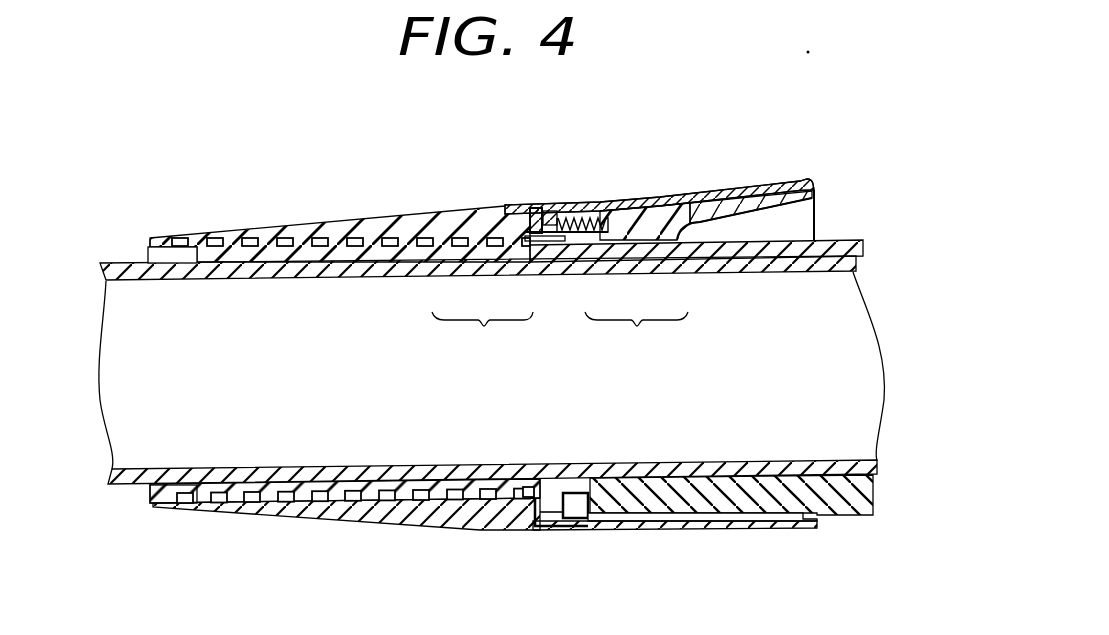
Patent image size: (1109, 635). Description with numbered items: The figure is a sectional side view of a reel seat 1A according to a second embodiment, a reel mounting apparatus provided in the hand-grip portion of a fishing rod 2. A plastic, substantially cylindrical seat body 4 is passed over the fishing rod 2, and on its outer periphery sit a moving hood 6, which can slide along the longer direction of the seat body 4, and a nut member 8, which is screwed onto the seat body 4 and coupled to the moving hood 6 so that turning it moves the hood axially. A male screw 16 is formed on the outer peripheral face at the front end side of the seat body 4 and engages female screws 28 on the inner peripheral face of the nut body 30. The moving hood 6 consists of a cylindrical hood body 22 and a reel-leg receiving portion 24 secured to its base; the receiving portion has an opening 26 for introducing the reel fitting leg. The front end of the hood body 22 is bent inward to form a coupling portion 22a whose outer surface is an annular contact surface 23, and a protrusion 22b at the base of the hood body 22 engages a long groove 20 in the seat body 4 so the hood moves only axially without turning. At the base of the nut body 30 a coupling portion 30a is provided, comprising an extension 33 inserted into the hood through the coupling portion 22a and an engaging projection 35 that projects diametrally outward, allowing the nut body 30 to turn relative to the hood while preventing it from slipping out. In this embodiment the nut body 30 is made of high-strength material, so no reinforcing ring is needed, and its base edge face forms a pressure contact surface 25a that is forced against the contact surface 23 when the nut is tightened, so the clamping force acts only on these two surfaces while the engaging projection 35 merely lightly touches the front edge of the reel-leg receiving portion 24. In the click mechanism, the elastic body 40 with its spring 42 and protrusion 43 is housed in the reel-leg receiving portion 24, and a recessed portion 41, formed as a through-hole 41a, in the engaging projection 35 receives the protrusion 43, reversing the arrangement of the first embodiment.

The reel seat 1A is at (670, 141).
The fishing rod 2 is at (787, 462).
The seat body 4 is at (856, 505).
The moving hood 6 is at (762, 176).
The nut member 8 is at (374, 205).
The male screw 16 is at (256, 484).
The long groove 20 is at (636, 496).
The hood body 22 is at (618, 203).
The coupling portion 22a is at (535, 207).
The protrusion 22b is at (757, 521).
The contact surface 23 is at (526, 488).
The reel-leg receiving portion 24 is at (714, 210).
The pressure contact surface 25a is at (540, 521).
The opening 26 is at (805, 222).
The female screws 28 is at (279, 235).
The nut body 30 is at (470, 210).
The coupling portion 30a is at (482, 333).
The extension 33 is at (500, 248).
The engaging projection 35 is at (536, 256).
The elastic body 40 is at (636, 333).
The recessed portion 41 is at (611, 533).
The through-hole 41a is at (552, 212).
The spring 42 is at (640, 250).
The protrusion 43 is at (592, 250).